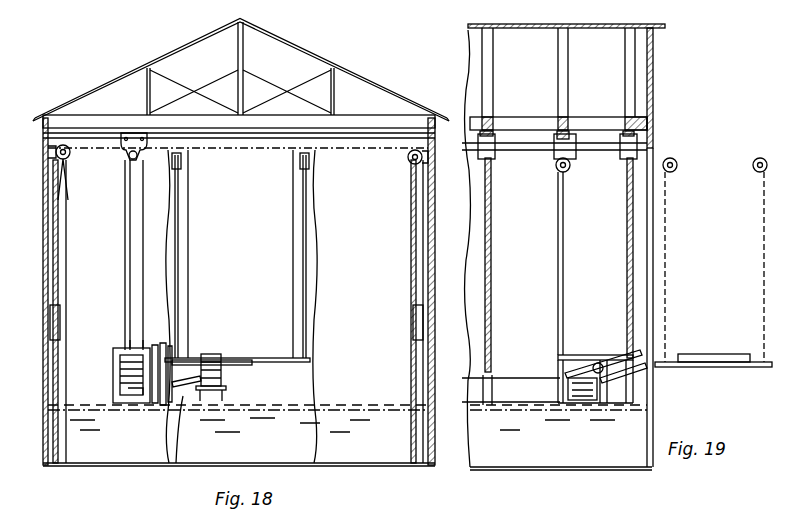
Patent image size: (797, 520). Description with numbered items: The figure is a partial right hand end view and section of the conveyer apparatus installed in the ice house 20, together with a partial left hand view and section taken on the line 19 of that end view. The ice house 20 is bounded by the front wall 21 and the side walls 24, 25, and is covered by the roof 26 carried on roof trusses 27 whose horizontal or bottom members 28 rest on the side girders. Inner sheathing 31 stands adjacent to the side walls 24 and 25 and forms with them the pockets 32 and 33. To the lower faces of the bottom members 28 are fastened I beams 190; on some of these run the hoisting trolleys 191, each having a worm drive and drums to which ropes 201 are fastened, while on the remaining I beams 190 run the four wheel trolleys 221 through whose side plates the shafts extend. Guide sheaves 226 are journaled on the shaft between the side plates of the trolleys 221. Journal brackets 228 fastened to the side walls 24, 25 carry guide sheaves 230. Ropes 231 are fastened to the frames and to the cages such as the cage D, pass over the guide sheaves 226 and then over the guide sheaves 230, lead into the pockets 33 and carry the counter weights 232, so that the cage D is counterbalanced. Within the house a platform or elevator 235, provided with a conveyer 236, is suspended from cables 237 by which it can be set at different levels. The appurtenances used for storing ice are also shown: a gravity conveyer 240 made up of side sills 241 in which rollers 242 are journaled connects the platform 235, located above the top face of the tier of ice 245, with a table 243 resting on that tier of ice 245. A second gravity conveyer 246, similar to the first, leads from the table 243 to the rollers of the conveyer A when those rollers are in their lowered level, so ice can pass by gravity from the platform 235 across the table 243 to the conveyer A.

In FIG. 18, the section line 19 is at (243, 18).
In FIG. 18, the ice house 20 is at (241, 306).
In FIG. 19, the ice house 20 is at (655, 205).
In FIG. 18, the front wall 21 is at (179, 208).
In FIG. 19, the front wall 21 is at (654, 94).
In FIG. 18, the side wall 24 is at (435, 295).
In FIG. 18, the side wall 25 is at (43, 370).
In FIG. 18, the roof 26 is at (378, 100).
In FIG. 19, the roof 26 is at (550, 30).
In FIG. 18, the roof truss 27 is at (197, 90).
In FIG. 19, the roof truss 27 is at (570, 66).
In FIG. 18, the horizontal or bottom member 28 is at (136, 115).
In FIG. 19, the horizontal or bottom member 28 is at (467, 188).
In FIG. 18, the inner sheathing 31 is at (67, 246).
In FIG. 18, the pocket 32 is at (424, 466).
In FIG. 18, the pocket 33 is at (53, 466).
In FIG. 18, the I beam 190 is at (355, 132).
In FIG. 19, the I beam 190 is at (497, 133).
In FIG. 19, the hoisting trolley 191 is at (571, 165).
In FIG. 19, the rope 201 is at (558, 289).
In FIG. 18, the four wheel trolley 221 is at (146, 138).
In FIG. 19, the four wheel trolley 221 is at (492, 158).
In FIG. 18, the guide sheave 226 is at (130, 160).
In FIG. 18, the journal bracket 228 is at (422, 160).
In FIG. 18, the guide sheave 230 is at (72, 160).
In FIG. 18, the rope 231 is at (142, 283).
In FIG. 19, the rope 231 is at (491, 233).
In FIG. 18, the counter weight 232 is at (61, 321).
In FIG. 18, the platform or elevator 235 is at (283, 349).
In FIG. 19, the platform or elevator 235 is at (713, 377).
In FIG. 19, the conveyer 236 is at (733, 353).
In FIG. 18, the cable 237 is at (302, 255).
In FIG. 19, the cable 237 is at (763, 287).
In FIG. 18, the gravity conveyer 240 is at (186, 381).
In FIG. 19, the gravity conveyer 240 is at (640, 370).
In FIG. 18, the side sill 241 is at (222, 374).
In FIG. 18, the roller 242 is at (211, 354).
In FIG. 18, the table 243 is at (227, 389).
In FIG. 18, the tier of ice 245 is at (86, 410).
In FIG. 19, the tier of ice 245 is at (561, 437).
In FIG. 18, the second gravity conveyer 246 is at (180, 396).
In FIG. 19, the second gravity conveyer 246 is at (583, 400).
In FIG. 18, the cage D is at (113, 360).
In FIG. 19, the cage D is at (590, 360).
In FIG. 19, the conveyer A is at (511, 382).